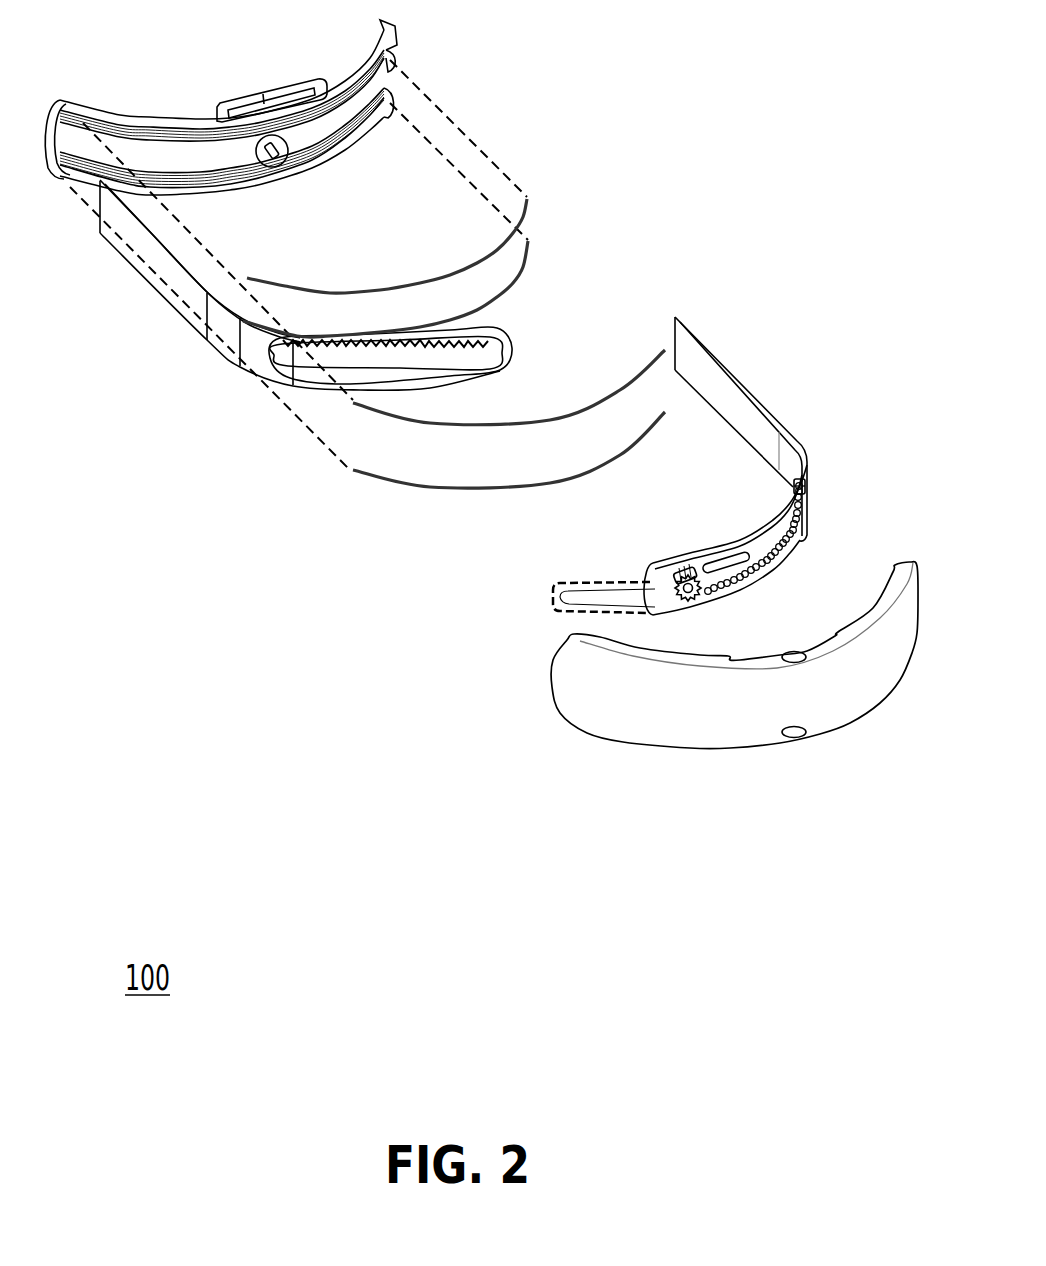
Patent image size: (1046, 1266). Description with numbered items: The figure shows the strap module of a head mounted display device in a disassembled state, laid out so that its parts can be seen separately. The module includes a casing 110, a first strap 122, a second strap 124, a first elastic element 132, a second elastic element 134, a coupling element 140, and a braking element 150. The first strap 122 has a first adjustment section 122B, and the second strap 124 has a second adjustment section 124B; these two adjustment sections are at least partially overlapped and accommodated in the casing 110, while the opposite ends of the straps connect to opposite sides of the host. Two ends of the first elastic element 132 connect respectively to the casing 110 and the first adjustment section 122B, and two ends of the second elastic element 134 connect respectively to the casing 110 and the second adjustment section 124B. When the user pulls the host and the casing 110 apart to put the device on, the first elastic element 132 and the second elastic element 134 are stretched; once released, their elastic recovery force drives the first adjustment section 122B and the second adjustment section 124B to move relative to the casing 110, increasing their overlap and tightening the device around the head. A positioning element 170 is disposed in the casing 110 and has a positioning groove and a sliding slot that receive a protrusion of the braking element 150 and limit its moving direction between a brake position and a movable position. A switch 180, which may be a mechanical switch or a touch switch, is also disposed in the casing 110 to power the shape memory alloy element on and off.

The casing 110 is at (145, 117).
The first strap 122 is at (140, 261).
The first adjustment section 122B is at (278, 347).
The second strap 124 is at (713, 373).
The second adjustment section 124B is at (745, 535).
The first elastic element 132 is at (529, 240).
The second elastic element 134 is at (353, 404).
The coupling element 140 is at (650, 567).
The braking element 150 is at (587, 606).
The positioning element 170 is at (805, 492).
The switch 180 is at (793, 663).